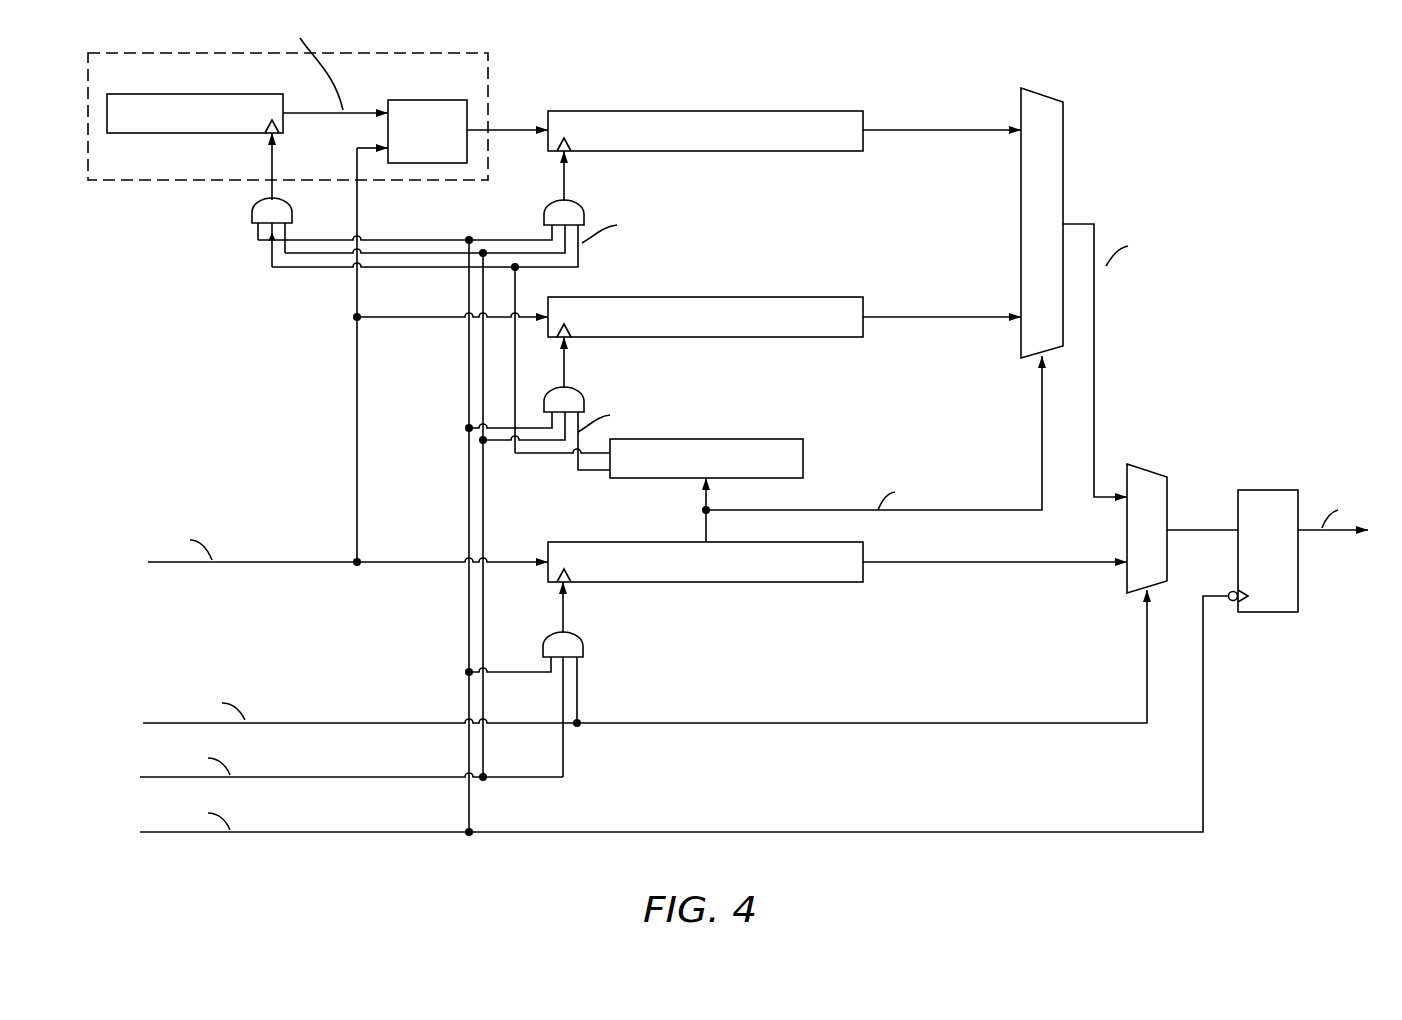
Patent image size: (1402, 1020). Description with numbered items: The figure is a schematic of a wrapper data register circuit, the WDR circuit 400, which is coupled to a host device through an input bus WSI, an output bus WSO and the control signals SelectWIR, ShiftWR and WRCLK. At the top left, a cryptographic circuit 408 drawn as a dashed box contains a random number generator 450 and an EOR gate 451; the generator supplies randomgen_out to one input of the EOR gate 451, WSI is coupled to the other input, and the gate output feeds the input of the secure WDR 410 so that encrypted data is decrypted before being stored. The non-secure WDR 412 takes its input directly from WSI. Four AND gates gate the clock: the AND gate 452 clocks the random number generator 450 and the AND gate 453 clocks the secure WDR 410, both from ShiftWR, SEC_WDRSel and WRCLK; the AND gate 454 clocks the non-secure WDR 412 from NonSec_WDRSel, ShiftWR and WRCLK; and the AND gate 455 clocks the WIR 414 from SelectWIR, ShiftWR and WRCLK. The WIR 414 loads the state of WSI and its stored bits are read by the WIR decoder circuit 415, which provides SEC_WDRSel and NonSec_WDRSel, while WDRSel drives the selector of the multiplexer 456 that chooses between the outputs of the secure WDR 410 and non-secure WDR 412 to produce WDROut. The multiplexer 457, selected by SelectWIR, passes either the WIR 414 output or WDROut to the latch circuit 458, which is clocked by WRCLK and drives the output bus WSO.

The WDR circuit 400 is at (158, 40).
The cryptographic circuit 408 is at (472, 53).
The secure WDR 410 is at (617, 110).
The non-secure WDR 412 is at (672, 297).
The WIR 414 is at (617, 541).
The WIR decoder circuit 415 is at (805, 456).
The random number generator 450 is at (176, 92).
The EOR gate 451 is at (428, 98).
The AND gate 452 is at (250, 213).
The AND gate 453 is at (543, 215).
The AND gate 454 is at (586, 400).
The AND gate 455 is at (585, 643).
The multiplexer 456 is at (1040, 92).
The multiplexer 457 is at (1148, 470).
The latch circuit 458 is at (1268, 490).